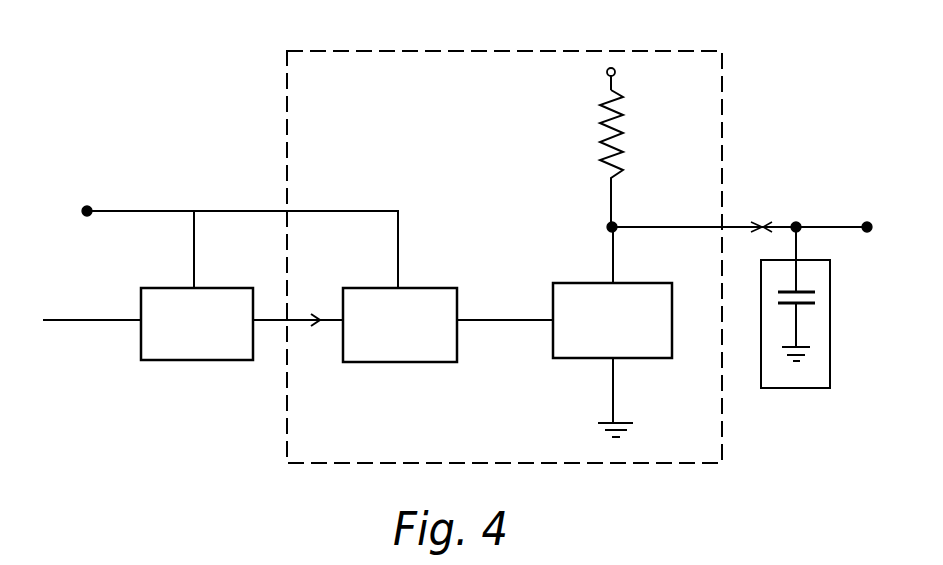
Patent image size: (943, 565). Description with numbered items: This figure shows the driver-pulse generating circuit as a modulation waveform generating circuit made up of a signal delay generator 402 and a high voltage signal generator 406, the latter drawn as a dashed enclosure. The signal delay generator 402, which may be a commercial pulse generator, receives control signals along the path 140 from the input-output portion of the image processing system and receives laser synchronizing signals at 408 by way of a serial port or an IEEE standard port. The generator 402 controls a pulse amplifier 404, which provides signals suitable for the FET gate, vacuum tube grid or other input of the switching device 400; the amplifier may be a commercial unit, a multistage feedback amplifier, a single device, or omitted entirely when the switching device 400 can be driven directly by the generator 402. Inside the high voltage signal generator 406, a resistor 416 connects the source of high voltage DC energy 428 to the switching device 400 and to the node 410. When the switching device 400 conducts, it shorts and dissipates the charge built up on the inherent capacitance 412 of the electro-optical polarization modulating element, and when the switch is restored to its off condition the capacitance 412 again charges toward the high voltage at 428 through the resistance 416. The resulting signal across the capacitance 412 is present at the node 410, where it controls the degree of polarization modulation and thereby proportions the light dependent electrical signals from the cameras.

The path 140 is at (220, 211).
The switching device 400 is at (648, 283).
The signal delay generator 402 is at (177, 360).
The pulse amplifier 404 is at (378, 362).
The high voltage signal generator 406 is at (463, 51).
The synchronizing signal input 408 is at (103, 321).
The node 410 is at (867, 222).
The inherent capacitance 412 is at (786, 389).
The resistor 416 is at (624, 99).
The source of high voltage DC energy 428 is at (607, 75).